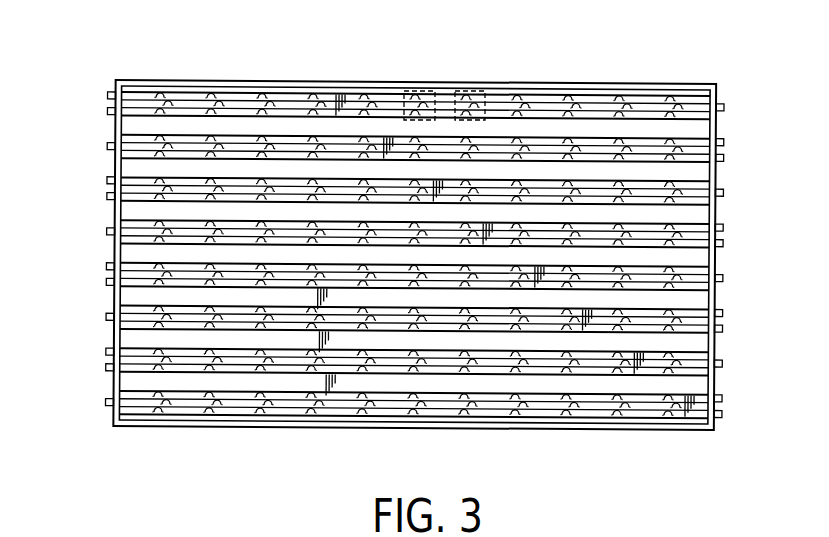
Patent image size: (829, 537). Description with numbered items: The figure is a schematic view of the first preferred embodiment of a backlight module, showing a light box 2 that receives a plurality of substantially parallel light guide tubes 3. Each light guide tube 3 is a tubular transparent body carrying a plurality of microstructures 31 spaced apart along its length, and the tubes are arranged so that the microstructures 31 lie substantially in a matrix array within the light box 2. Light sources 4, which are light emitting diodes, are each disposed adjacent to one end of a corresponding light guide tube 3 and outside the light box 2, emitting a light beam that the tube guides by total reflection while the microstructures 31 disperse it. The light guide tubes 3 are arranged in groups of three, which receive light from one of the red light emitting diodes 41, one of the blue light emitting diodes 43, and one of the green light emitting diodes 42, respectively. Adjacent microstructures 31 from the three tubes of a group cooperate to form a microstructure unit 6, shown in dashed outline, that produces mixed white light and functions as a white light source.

The light box 2 is at (719, 93).
The light guide tubes 3 is at (695, 150).
The microstructures 31 is at (646, 111).
The light sources 4 is at (733, 120).
The red light emitting diodes 41 is at (107, 95).
The green light emitting diodes 42 is at (726, 107).
The blue light emitting diodes 43 is at (107, 112).
The microstructure unit 6 is at (422, 91).